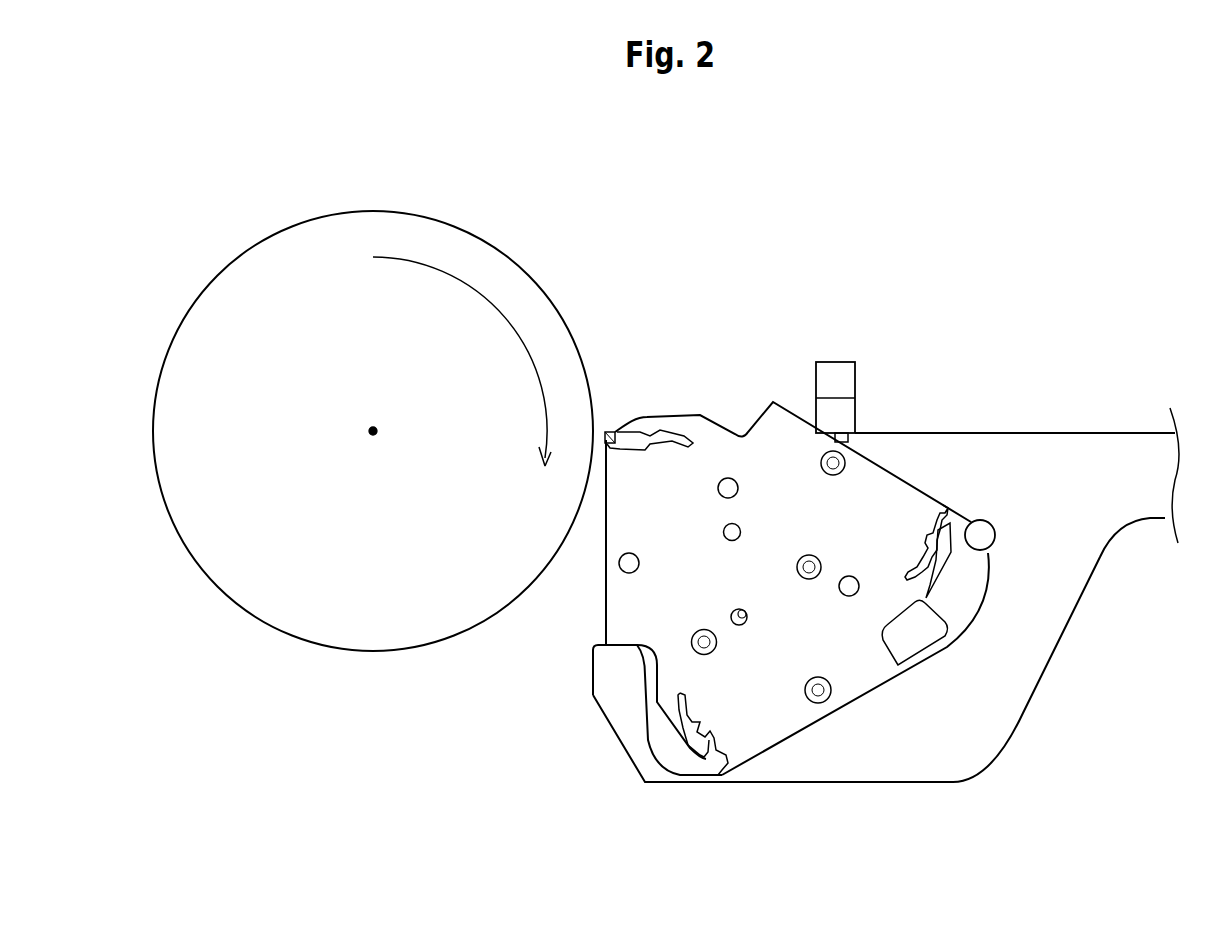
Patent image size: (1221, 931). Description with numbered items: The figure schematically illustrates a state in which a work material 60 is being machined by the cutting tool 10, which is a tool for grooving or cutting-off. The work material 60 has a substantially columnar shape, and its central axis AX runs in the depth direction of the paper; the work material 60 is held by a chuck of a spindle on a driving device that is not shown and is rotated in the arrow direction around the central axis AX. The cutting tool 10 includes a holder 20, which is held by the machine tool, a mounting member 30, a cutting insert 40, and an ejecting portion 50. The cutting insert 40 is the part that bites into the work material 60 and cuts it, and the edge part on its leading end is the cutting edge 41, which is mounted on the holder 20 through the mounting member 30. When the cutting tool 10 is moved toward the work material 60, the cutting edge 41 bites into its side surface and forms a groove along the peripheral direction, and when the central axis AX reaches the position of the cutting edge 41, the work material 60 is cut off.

The cutting tool 10 is at (1065, 386).
The holder 20 is at (985, 450).
The mounting member 30 is at (785, 430).
The cutting insert 40 is at (618, 433).
The cutting edge 41 is at (604, 430).
The ejecting portion 50 is at (832, 360).
The work material 60 is at (529, 273).
The central axis AX is at (372, 440).